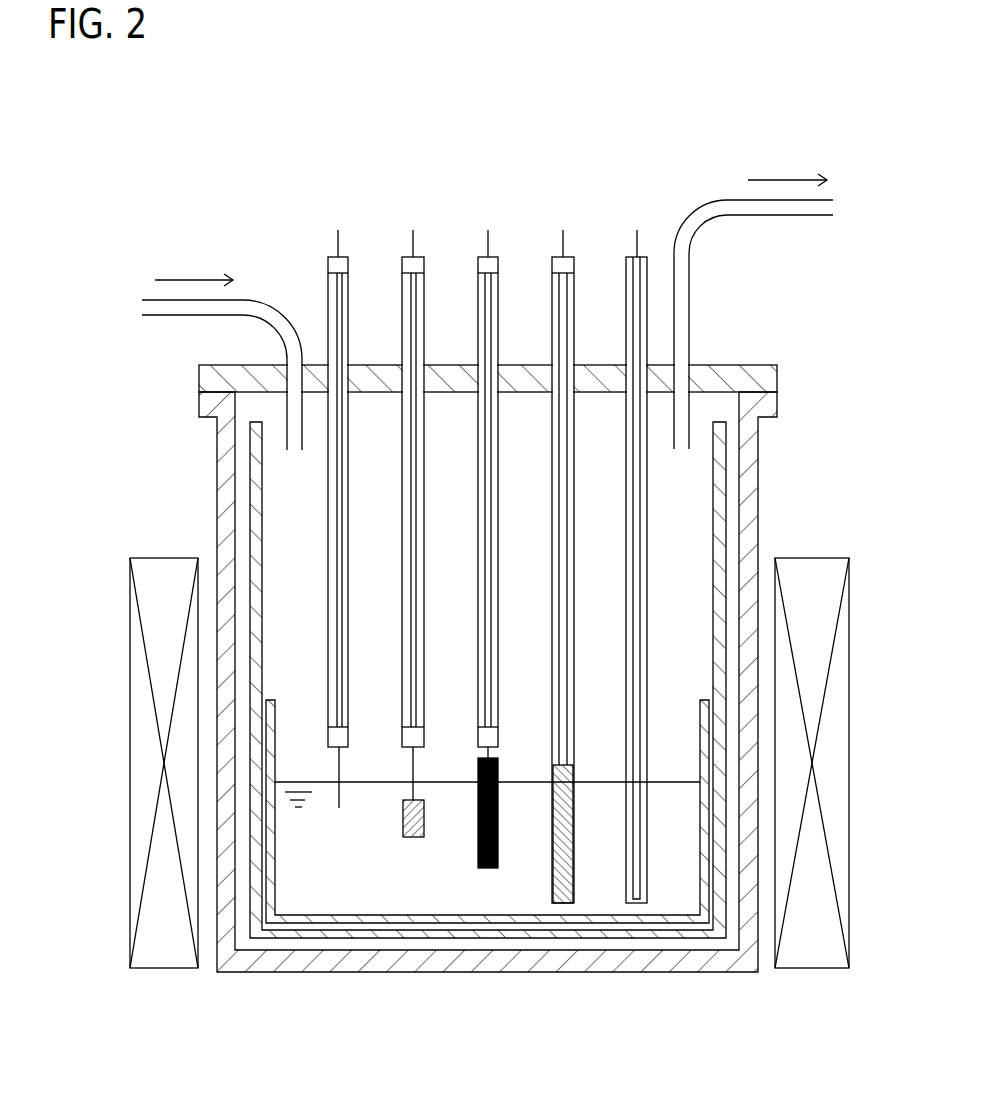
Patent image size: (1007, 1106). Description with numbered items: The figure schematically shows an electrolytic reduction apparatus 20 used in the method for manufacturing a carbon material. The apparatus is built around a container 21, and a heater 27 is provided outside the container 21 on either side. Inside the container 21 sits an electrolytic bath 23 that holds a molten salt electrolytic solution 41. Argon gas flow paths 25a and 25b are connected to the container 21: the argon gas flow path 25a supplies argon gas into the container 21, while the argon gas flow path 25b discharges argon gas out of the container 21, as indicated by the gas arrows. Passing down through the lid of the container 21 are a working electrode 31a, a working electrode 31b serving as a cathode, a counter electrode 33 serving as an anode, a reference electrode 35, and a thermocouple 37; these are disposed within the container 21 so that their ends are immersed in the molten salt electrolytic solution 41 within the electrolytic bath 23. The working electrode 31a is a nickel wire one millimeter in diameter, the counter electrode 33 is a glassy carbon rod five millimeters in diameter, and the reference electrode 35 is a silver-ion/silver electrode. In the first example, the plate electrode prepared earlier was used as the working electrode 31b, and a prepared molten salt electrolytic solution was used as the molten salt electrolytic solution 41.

The electrolytic reduction apparatus 20 is at (215, 158).
The container 21 is at (750, 458).
The electrolytic bath 23 is at (705, 700).
The argon gas flow path 25a is at (152, 317).
The argon gas flow path 25b is at (712, 218).
The heater 27 is at (165, 558).
The working electrode 31a is at (340, 795).
The working electrode 31b is at (414, 838).
The counter electrode 33 is at (486, 870).
The reference electrode 35 is at (564, 905).
The thermocouple 37 is at (638, 905).
The molten salt electrolytic solution 41 is at (360, 895).